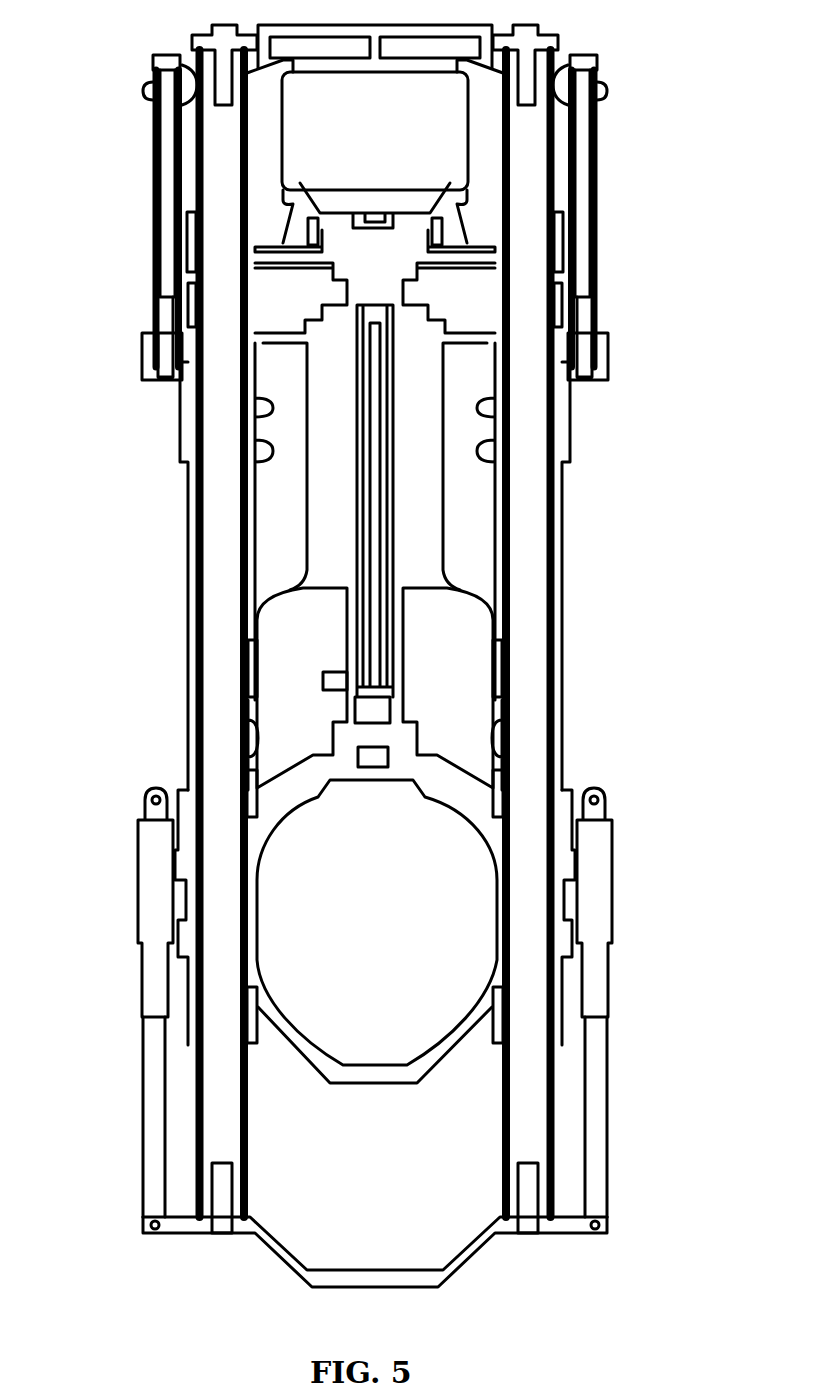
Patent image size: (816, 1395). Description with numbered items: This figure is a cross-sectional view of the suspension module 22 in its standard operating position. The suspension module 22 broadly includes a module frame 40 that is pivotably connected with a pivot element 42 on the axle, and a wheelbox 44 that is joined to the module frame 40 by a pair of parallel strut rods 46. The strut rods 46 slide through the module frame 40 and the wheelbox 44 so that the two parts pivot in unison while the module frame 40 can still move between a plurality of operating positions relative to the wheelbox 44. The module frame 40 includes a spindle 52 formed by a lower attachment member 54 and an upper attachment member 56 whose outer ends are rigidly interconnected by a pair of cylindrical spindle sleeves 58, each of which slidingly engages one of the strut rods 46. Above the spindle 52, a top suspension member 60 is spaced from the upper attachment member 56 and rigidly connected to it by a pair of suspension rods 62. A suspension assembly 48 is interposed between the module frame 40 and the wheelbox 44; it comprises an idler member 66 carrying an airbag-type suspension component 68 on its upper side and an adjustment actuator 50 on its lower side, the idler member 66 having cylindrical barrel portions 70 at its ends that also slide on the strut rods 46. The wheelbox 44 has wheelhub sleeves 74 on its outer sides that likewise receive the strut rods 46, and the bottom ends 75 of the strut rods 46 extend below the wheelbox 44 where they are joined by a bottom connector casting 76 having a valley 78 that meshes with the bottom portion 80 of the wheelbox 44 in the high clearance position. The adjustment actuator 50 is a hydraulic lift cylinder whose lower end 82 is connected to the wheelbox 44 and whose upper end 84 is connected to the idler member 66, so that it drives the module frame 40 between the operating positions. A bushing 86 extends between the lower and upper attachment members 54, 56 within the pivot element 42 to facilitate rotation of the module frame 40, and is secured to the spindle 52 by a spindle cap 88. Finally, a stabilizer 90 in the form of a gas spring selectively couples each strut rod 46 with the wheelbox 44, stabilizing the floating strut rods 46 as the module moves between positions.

The suspension module 22 is at (627, 683).
The module frame 40 is at (588, 429).
The pivot element 42 is at (303, 518).
The wheelbox 44 is at (445, 1047).
The strut rods 46 is at (195, 720).
The suspension assembly 48 is at (621, 205).
The adjustment actuator 50 is at (405, 660).
The spindle 52 is at (569, 552).
The lower attachment member 54 is at (293, 593).
The upper attachment member 56 is at (297, 347).
The spindle sleeves 58 is at (188, 525).
The top suspension member 60 is at (150, 88).
The suspension rods 62 is at (152, 205).
The idler member 66 is at (283, 268).
The suspension component 68 is at (470, 110).
The barrel portions 70 is at (186, 240).
The wheelhub sleeves 74 is at (185, 915).
The bottom ends 75 is at (505, 1197).
The bottom connector casting 76 is at (300, 1258).
The valley 78 is at (378, 1275).
The bottom portion 80 is at (365, 1085).
The lower end 82 is at (410, 710).
The upper end 84 is at (417, 275).
The bushing 86 is at (425, 327).
The spindle cap 88 is at (320, 315).
The stabilizer 90 is at (598, 990).